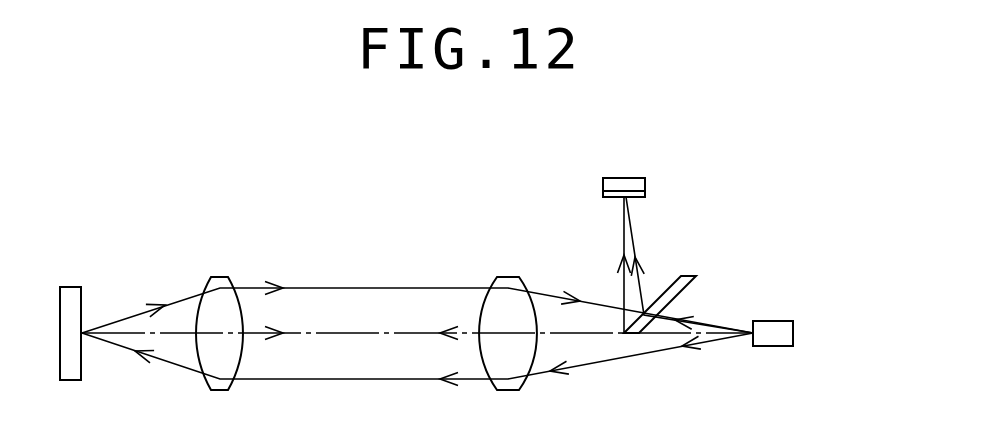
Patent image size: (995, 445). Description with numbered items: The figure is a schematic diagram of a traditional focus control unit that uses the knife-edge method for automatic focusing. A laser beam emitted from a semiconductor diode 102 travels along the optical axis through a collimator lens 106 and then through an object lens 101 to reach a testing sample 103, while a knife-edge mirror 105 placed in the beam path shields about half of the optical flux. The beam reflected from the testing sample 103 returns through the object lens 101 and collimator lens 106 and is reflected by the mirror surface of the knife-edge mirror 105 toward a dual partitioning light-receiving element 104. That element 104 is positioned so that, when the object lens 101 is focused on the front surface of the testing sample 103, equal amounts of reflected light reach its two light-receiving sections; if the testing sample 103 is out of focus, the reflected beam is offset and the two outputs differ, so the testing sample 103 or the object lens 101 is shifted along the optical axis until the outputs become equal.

The object lens 101 is at (222, 277).
The semiconductor diode 102 is at (793, 333).
The testing sample 103 is at (72, 287).
The dual partitioning light-receiving element 104 is at (645, 185).
The knife-edge mirror 105 is at (696, 278).
The collimator lens 106 is at (509, 277).